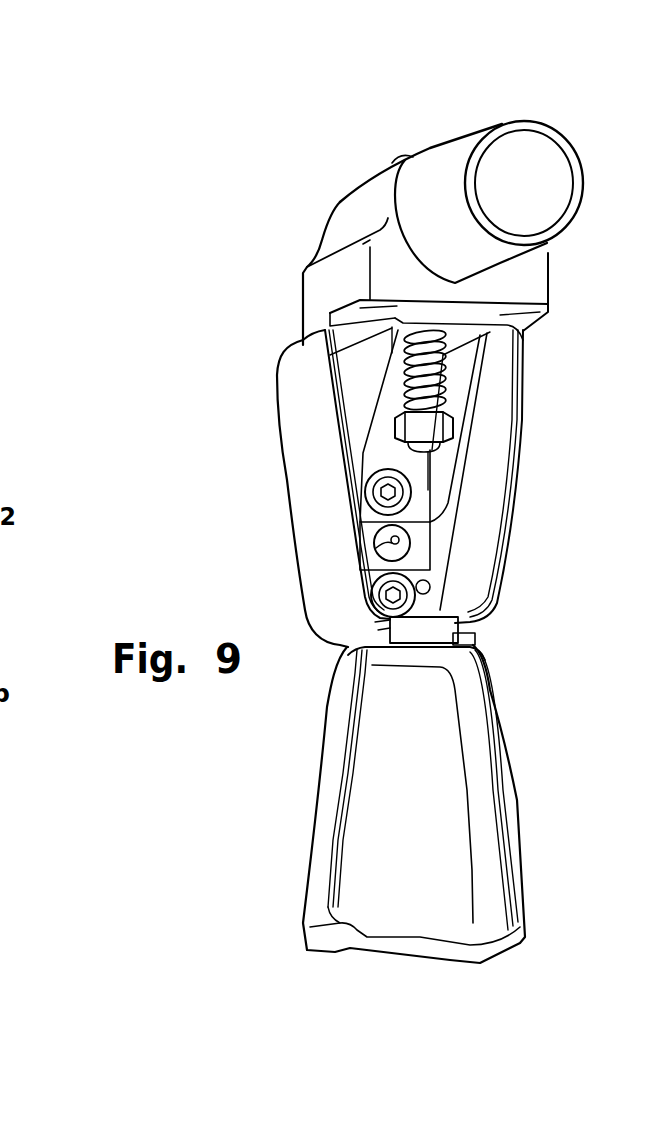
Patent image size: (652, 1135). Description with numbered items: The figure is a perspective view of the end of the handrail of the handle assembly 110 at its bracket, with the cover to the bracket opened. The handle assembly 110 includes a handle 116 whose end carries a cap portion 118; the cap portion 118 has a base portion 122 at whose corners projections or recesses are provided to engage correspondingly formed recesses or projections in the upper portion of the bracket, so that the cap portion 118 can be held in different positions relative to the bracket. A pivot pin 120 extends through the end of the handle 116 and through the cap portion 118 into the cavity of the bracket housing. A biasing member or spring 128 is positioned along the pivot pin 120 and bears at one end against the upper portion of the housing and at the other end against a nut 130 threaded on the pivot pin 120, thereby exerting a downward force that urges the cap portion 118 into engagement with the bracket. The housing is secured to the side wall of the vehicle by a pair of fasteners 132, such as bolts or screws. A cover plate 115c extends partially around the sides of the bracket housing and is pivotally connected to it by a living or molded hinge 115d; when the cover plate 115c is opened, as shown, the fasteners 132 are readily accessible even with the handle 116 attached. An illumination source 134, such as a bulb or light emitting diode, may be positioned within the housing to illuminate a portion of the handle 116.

The handle assembly 110 is at (296, 206).
The handle 116 is at (450, 175).
The cap portion 118 is at (339, 202).
The pivot pin 120 is at (397, 159).
The base portion 122 is at (322, 283).
The biasing member or spring 128 is at (442, 363).
The nut 130 is at (434, 418).
The fasteners 132 is at (370, 492).
The illumination source 134 is at (383, 539).
The cover plate 115c is at (477, 735).
The hinge 115d is at (488, 610).